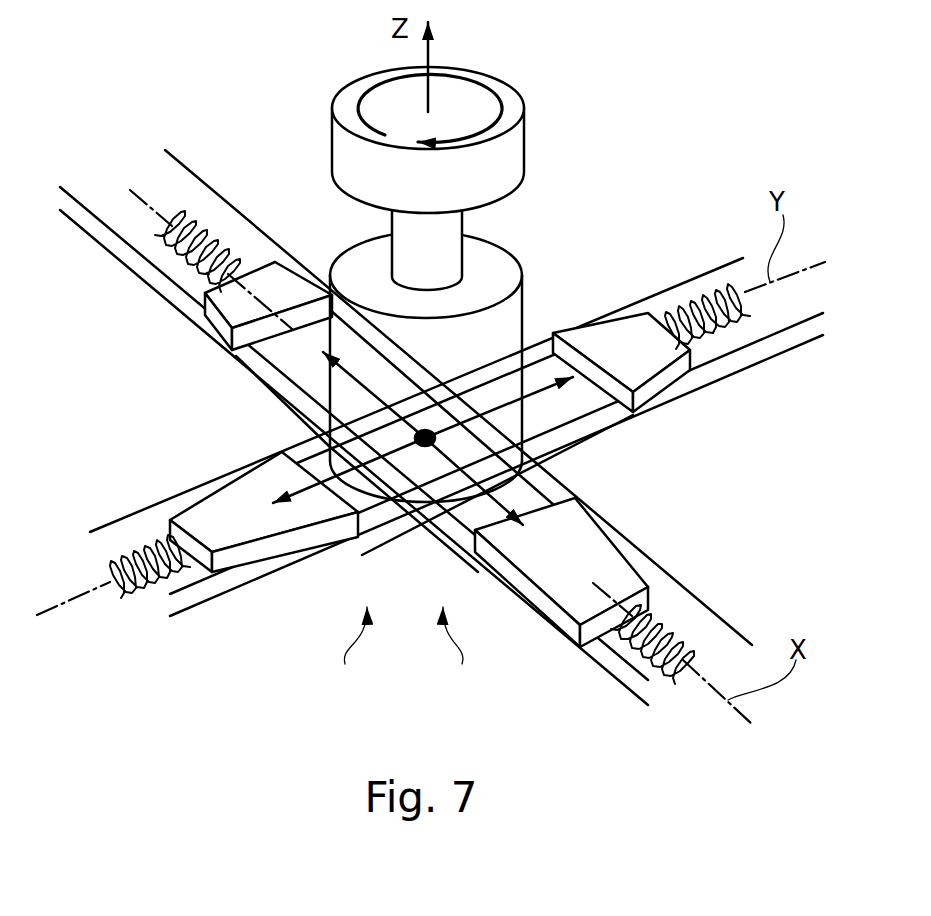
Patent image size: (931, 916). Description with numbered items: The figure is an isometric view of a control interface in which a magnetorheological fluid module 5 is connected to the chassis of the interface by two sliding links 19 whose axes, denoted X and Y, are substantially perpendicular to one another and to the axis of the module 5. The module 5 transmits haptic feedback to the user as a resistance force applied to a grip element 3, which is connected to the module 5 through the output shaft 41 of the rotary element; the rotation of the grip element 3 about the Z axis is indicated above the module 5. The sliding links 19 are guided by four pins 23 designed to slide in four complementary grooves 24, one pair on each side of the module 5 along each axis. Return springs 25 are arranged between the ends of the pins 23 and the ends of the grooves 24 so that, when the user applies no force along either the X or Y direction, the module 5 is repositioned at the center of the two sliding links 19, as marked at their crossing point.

The grip element 3 is at (458, 102).
The output shaft 41 is at (448, 257).
The magnetorheological fluid module 5 is at (342, 427).
The pins 23 is at (278, 283).
The grooves 24 is at (185, 198).
The return springs 25 is at (185, 263).
The sliding links 19 is at (404, 652).